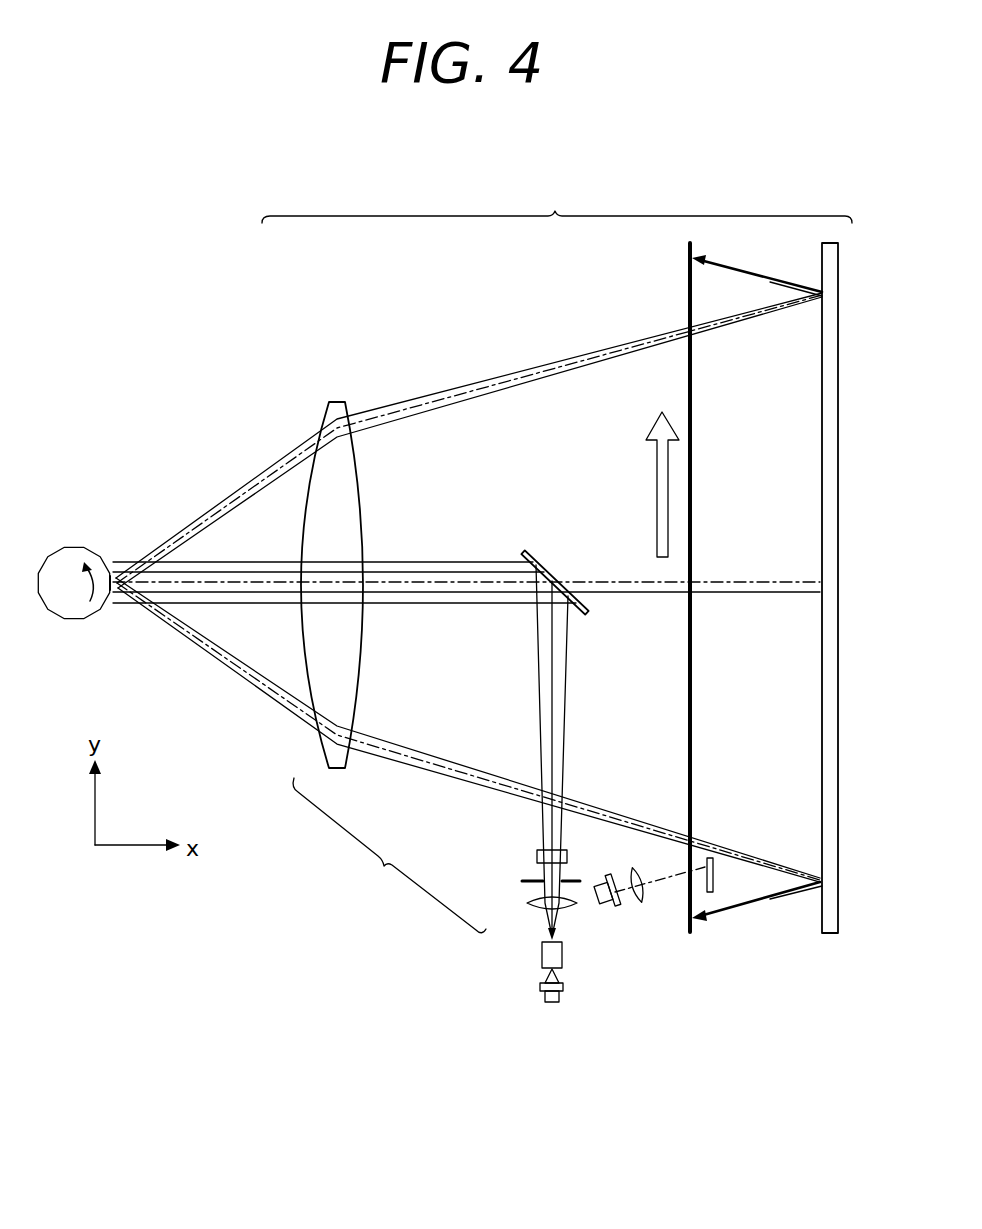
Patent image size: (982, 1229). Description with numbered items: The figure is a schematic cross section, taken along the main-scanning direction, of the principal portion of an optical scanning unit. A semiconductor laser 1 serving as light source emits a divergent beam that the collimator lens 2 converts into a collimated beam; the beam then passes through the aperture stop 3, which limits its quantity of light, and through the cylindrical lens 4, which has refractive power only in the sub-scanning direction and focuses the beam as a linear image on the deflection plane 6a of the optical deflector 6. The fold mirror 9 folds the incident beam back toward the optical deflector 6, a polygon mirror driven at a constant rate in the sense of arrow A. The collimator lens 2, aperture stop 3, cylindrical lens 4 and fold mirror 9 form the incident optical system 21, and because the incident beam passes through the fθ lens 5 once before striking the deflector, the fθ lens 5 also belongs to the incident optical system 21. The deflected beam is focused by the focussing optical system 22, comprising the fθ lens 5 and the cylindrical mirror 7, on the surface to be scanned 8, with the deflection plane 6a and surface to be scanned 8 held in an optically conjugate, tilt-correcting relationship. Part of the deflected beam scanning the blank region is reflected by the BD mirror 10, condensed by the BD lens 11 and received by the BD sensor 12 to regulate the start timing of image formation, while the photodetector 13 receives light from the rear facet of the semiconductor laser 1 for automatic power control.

The semiconductor laser 1 is at (562, 954).
The collimator lens 2 is at (528, 903).
The aperture stop 3 is at (524, 880).
The cylindrical lens 4 is at (537, 852).
The fθ lens 5 is at (343, 401).
The optical deflector 6 is at (80, 545).
The deflection plane 6a is at (116, 598).
The cylindrical mirror 7 is at (839, 354).
The surface to be scanned 8 is at (693, 446).
The fold mirror 9 is at (547, 565).
The BD mirror 10 is at (714, 874).
The BD lens 11 is at (641, 904).
The BD sensor 12 is at (610, 908).
The photodetector 13 is at (560, 996).
The incident optical system 21 is at (389, 855).
The focussing optical system 22 is at (557, 205).
The arrow A is at (98, 606).